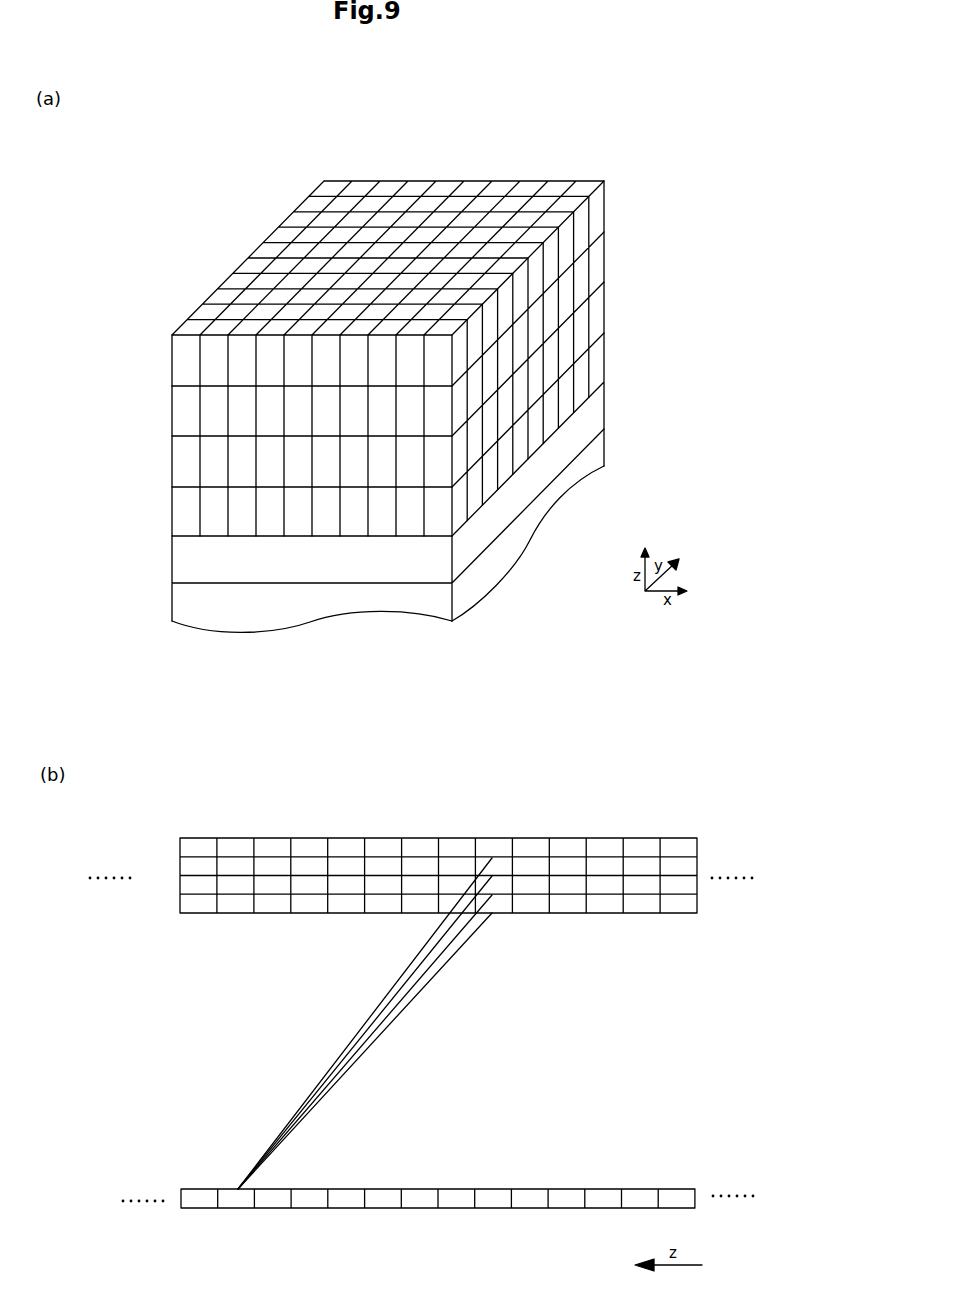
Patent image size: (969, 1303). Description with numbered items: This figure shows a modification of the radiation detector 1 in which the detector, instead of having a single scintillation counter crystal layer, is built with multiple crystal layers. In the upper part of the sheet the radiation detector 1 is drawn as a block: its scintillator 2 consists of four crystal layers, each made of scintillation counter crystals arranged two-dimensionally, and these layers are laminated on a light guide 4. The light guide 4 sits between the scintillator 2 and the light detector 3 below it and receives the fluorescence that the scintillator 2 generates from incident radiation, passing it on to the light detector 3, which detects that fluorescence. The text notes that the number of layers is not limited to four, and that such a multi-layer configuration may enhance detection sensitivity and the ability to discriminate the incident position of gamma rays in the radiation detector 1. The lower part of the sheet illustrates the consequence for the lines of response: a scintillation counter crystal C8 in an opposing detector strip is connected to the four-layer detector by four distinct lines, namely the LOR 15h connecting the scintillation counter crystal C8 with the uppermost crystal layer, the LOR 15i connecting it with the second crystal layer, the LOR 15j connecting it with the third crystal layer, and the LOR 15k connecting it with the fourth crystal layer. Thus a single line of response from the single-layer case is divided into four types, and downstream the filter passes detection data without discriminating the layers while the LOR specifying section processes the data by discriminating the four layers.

The radiation detector 1 is at (636, 198).
The scintillator 2 is at (167, 335).
The light detector 3 is at (502, 566).
The light guide 4 is at (609, 382).
The LOR 15h is at (420, 970).
The LOR 15i is at (408, 998).
The LOR 15j is at (393, 1020).
The LOR 15k is at (372, 1045).
The scintillation counter crystal C8 is at (248, 1210).